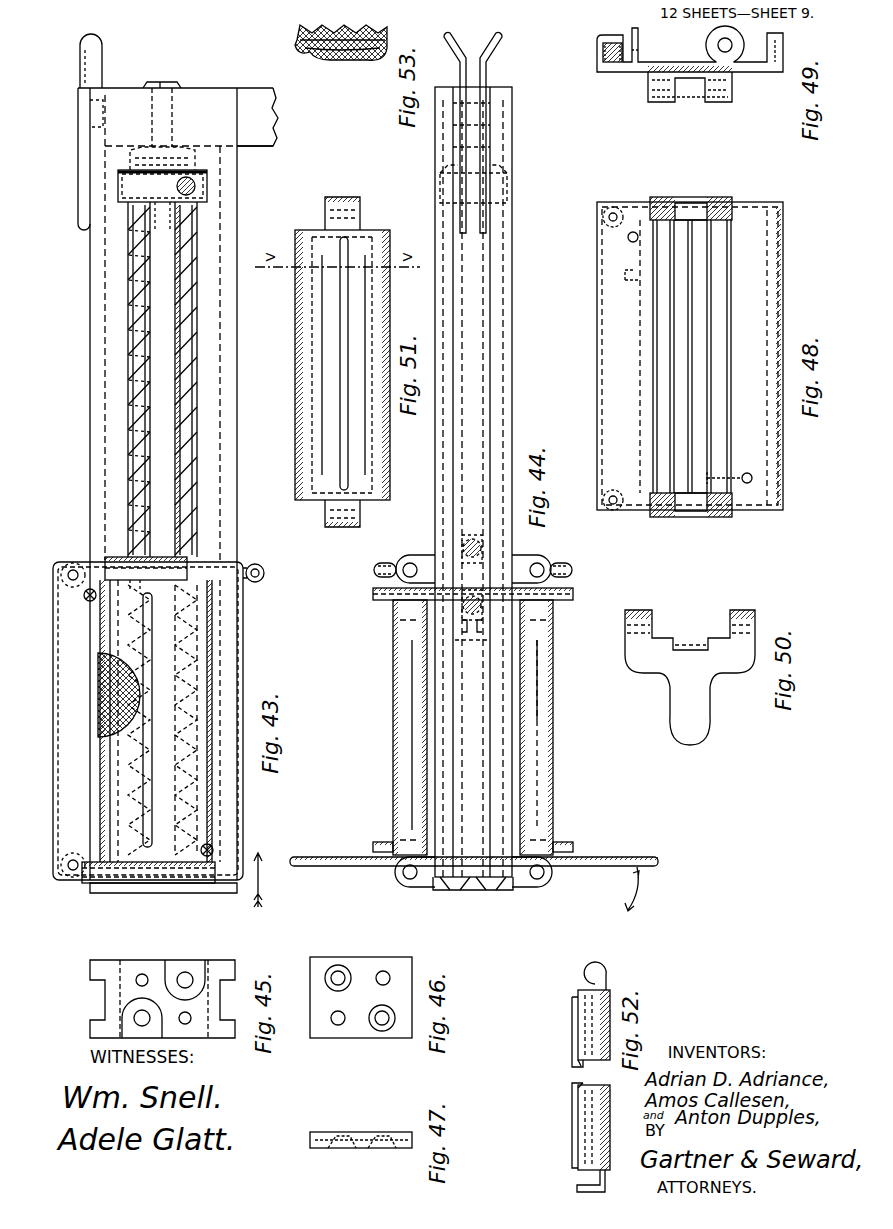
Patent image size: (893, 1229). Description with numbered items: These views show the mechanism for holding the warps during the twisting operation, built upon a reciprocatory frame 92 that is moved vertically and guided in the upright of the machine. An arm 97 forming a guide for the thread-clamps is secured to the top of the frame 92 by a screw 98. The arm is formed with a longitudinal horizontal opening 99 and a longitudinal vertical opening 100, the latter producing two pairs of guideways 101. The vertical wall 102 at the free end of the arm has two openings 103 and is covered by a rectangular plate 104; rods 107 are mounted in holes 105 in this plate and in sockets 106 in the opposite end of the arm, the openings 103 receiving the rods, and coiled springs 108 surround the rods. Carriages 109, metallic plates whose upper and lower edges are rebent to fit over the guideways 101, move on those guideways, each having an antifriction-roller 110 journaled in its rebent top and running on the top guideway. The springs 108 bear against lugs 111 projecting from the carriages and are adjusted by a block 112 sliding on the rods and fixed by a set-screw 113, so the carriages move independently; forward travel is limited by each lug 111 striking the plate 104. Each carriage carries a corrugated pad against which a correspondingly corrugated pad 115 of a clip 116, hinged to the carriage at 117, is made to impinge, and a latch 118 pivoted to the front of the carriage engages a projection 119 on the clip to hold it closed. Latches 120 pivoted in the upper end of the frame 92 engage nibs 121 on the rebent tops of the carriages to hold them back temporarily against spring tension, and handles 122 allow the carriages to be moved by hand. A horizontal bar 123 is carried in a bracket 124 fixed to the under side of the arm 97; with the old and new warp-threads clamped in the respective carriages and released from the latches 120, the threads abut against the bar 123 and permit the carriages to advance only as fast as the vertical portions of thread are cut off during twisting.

In FIG. 43, the reciprocatory frame 92 is at (262, 143).
In FIG. 43, the arm 97 is at (237, 416).
In FIG. 44, the arm 97 is at (512, 366).
In FIG. 43, the screw 98 is at (162, 86).
In FIG. 43, the longitudinal horizontal opening 99 is at (207, 310).
In FIG. 44, the longitudinal vertical opening 100 is at (512, 306).
In FIG. 43, the guideways 101 is at (233, 243).
In FIG. 44, the guideways 101 is at (512, 256).
In FIG. 43, the vertical wall 102 is at (90, 287).
In FIG. 45, the vertical wall 102 is at (146, 972).
In FIG. 45, the openings 103 is at (172, 962).
In FIG. 46, the rectangular plate 104 is at (362, 958).
In FIG. 47, the rectangular plate 104 is at (362, 1132).
In FIG. 46, the holes 105 is at (377, 984).
In FIG. 43, the sockets 106 is at (168, 148).
In FIG. 45, the sockets 106 is at (188, 974).
In FIG. 43, the rods 107 is at (147, 306).
In FIG. 43, the coiled springs 108 is at (152, 350).
In FIG. 43, the carriages 109 is at (243, 627).
In FIG. 44, the carriages 109 is at (447, 878).
In FIG. 49, the carriages 109 is at (648, 90).
In FIG. 48, the carriages 109 is at (783, 478).
In FIG. 49, the antifriction-roller 110 is at (600, 60).
In FIG. 49, the lugs 111 is at (708, 45).
In FIG. 43, the block 112 is at (152, 196).
In FIG. 43, the set-screw 113 is at (215, 193).
In FIG. 44, the set-screw 113 is at (573, 578).
In FIG. 53, the corrugated pad 115 is at (303, 46).
In FIG. 43, the clip 116 is at (152, 761).
In FIG. 53, the clip 116 is at (323, 62).
In FIG. 51, the clip 116 is at (392, 456).
In FIG. 44, the clip 116 is at (553, 754).
In FIG. 52, the clip 116 is at (592, 998).
In FIG. 44, the hinge 117 is at (541, 568).
In FIG. 48, the hinge 117 is at (718, 205).
In FIG. 44, the latch 118 is at (614, 857).
In FIG. 50, the latch 118 is at (673, 692).
In FIG. 51, the projection 119 is at (361, 509).
In FIG. 52, the projection 119 is at (607, 1181).
In FIG. 43, the latches 120 is at (82, 82).
In FIG. 44, the latches 120 is at (485, 52).
In FIG. 49, the nibs 121 is at (642, 36).
In FIG. 43, the handles 122 is at (86, 597).
In FIG. 44, the handles 122 is at (396, 836).
In FIG. 43, the horizontal bar 123 is at (265, 577).
In FIG. 44, the horizontal bar 123 is at (375, 571).
In FIG. 43, the bracket 124 is at (253, 562).
In FIG. 48, the bracket 124 is at (660, 367).